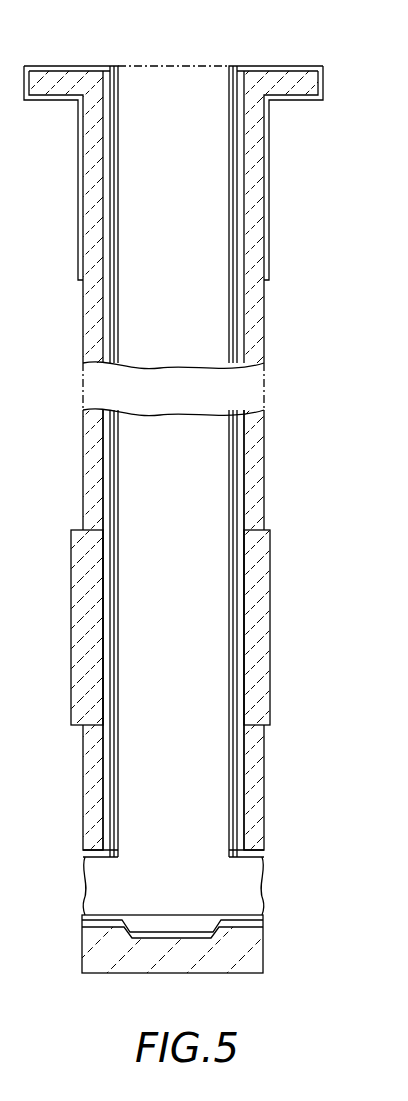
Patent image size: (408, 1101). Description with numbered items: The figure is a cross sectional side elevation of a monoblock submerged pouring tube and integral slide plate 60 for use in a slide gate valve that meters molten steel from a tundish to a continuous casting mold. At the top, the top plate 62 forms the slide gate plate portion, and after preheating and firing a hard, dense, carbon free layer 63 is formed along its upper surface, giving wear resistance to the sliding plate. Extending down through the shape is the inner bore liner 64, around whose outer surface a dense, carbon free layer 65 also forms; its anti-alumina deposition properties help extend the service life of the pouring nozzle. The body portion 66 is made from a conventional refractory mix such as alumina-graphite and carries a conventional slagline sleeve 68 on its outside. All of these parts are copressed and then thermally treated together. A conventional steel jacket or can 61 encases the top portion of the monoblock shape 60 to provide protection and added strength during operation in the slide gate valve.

The monoblock submerged pouring tube and integral slide plate 60 is at (293, 335).
The steel jacket 61 is at (25, 85).
The top plate 62 is at (293, 75).
The dense carbon free layer 63 is at (240, 66).
The inner bore liner 64 is at (110, 147).
The carbon free layer 65 is at (112, 215).
The body portion 66 is at (92, 335).
The slagline sleeve 68 is at (72, 593).